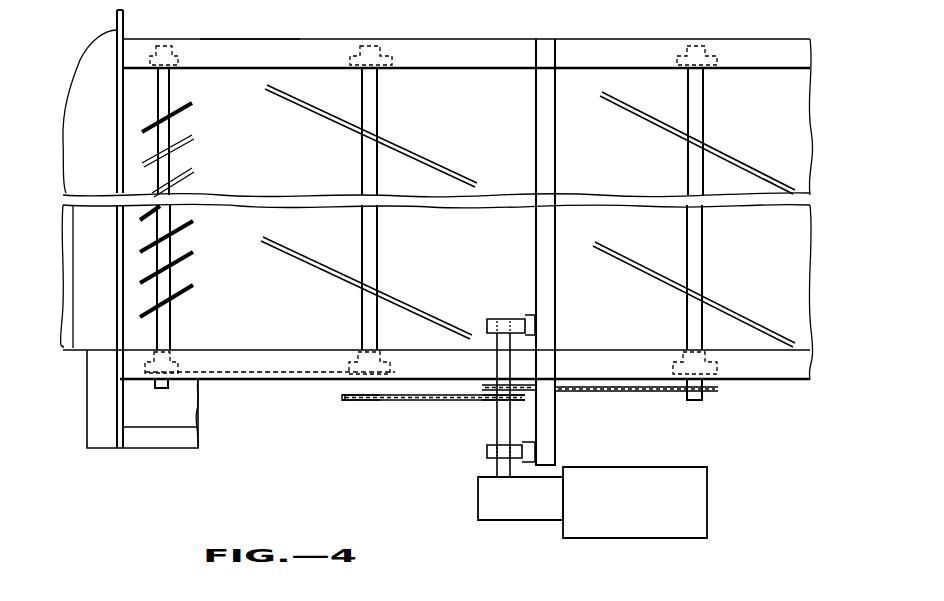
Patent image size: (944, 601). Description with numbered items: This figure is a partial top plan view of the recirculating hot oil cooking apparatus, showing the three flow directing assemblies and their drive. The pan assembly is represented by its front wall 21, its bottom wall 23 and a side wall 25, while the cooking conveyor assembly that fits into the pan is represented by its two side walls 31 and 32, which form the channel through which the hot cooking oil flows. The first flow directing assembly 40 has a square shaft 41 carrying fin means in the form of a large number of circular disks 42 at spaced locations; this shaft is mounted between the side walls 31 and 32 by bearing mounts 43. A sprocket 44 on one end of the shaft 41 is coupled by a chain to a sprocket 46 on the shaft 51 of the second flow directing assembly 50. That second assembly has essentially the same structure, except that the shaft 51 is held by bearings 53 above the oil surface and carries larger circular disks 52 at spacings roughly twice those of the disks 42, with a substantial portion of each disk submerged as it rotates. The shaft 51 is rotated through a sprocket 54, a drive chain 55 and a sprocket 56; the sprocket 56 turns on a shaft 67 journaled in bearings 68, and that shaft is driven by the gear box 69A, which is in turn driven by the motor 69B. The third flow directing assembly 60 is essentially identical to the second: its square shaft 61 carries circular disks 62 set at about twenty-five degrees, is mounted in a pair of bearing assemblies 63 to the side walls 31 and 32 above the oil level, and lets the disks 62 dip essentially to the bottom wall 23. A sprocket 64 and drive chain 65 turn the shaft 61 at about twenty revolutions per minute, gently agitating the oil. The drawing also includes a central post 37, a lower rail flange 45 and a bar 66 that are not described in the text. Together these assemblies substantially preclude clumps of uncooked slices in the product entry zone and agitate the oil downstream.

The front wall 21 is at (125, 80).
The bottom wall 23 is at (495, 82).
The side wall 25 is at (190, 398).
The side wall 31 is at (243, 71).
The side wall 32 is at (280, 347).
The center post 37 is at (556, 143).
The flow directing assembly 40 is at (236, 139).
The square shaft 41 is at (174, 128).
The circular disks 42 is at (188, 174).
The bearing mounts 43 is at (182, 46).
The sprocket 44 is at (157, 399).
The rail flange 45 is at (233, 372).
The sprocket 46 is at (340, 390).
The flow directing assembly 50 is at (466, 122).
The shaft 51 is at (378, 92).
The circular disks 52 is at (450, 173).
The bearings 53 is at (385, 46).
The sprocket 54 is at (346, 401).
The drive chain 55 is at (412, 401).
The sprocket 56 is at (490, 402).
The third flow directing assembly 60 is at (753, 247).
The square shaft 61 is at (703, 272).
The circular disks 62 is at (737, 162).
The bearing assemblies 63 is at (715, 46).
The sprocket 64 is at (708, 400).
The drive chain 65 is at (612, 392).
The bar 66 is at (490, 383).
The shaft 67 is at (511, 365).
The bearings 68 is at (512, 317).
The gear box 69A is at (532, 510).
The motor 69B is at (697, 530).